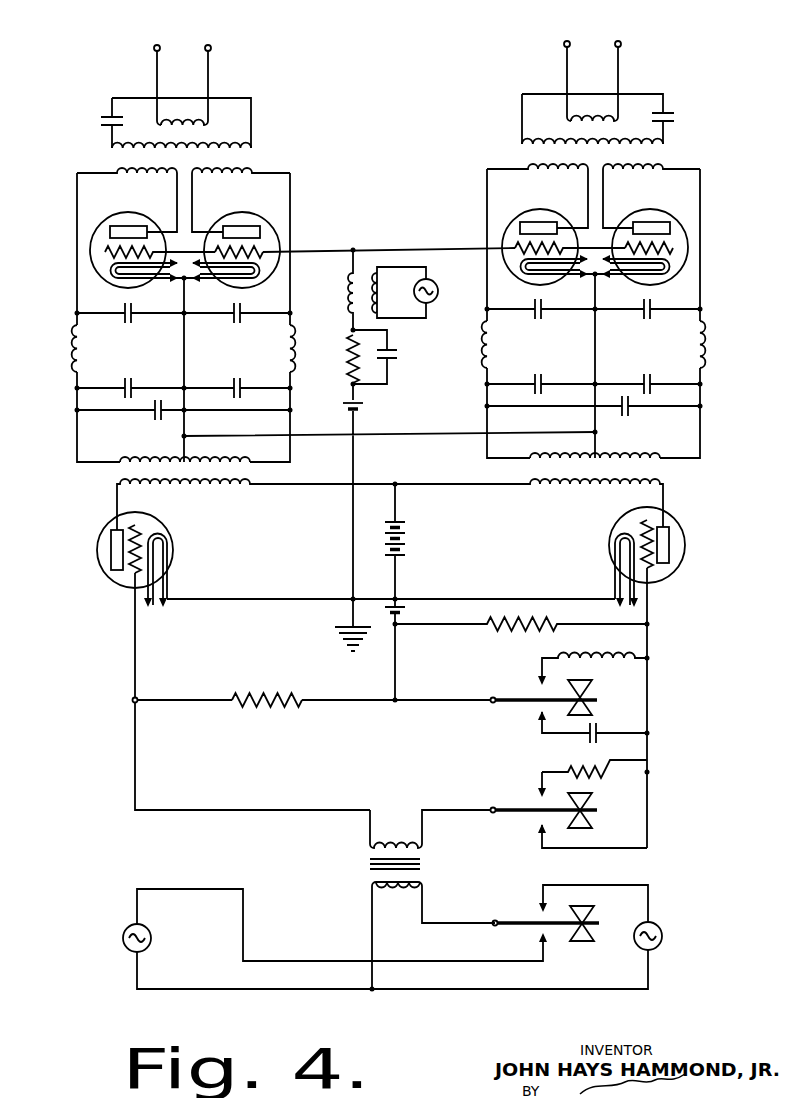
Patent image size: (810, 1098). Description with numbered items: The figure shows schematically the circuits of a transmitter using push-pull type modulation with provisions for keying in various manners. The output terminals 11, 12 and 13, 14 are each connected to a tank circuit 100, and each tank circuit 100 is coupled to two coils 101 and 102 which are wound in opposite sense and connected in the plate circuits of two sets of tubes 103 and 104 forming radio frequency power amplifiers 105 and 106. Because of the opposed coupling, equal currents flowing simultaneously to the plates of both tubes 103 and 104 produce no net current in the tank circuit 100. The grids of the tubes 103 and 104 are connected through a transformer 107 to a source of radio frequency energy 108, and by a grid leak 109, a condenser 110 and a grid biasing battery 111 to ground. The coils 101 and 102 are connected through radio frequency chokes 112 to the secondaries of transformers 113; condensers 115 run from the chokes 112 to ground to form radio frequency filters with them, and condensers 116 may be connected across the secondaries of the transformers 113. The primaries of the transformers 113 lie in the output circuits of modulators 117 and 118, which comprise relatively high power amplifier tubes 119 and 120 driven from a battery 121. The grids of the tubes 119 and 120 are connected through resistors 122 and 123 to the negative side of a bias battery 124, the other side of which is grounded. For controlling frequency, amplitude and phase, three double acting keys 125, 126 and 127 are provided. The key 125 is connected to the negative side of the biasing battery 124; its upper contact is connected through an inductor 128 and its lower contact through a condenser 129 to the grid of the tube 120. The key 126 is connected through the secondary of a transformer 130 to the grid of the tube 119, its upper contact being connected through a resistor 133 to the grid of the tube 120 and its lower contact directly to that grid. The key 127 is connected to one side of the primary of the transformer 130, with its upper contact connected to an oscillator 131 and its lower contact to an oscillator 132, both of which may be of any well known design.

The output terminal 11 is at (156, 44).
The output terminal 12 is at (208, 44).
The output terminal 13 is at (567, 41).
The output terminal 14 is at (618, 41).
The tank circuit 100 is at (387, 121).
The coil 101 is at (117, 170).
The coil 102 is at (252, 170).
The tube 103 is at (108, 220).
The tube 104 is at (234, 211).
The radio frequency power amplifier 105 is at (50, 258).
The radio frequency power amplifier 106 is at (757, 254).
The transformer 107 is at (351, 309).
The source of radio frequency energy 108 is at (436, 297).
The grid leak 109 is at (351, 372).
The condenser 110 is at (394, 355).
The grid biasing battery 111 is at (366, 405).
The radio frequency choke 112 is at (71, 358).
The transformer 113 is at (118, 474).
The condenser 115 is at (131, 322).
The condenser 116 is at (156, 422).
The modulator 117 is at (74, 561).
The modulator 118 is at (739, 557).
The amplifier tube 119 is at (171, 549).
The amplifier tube 120 is at (613, 550).
The battery 121 is at (406, 539).
The resistor 122 is at (287, 705).
The resistor 123 is at (500, 633).
The bias battery 124 is at (406, 616).
The double acting key 125 is at (594, 698).
The double acting key 126 is at (594, 808).
The double acting key 127 is at (568, 933).
The inductor 128 is at (577, 653).
The condenser 129 is at (583, 743).
The transformer 130 is at (368, 866).
The oscillator 131 is at (663, 936).
The oscillator 132 is at (122, 938).
The resistor 133 is at (585, 771).